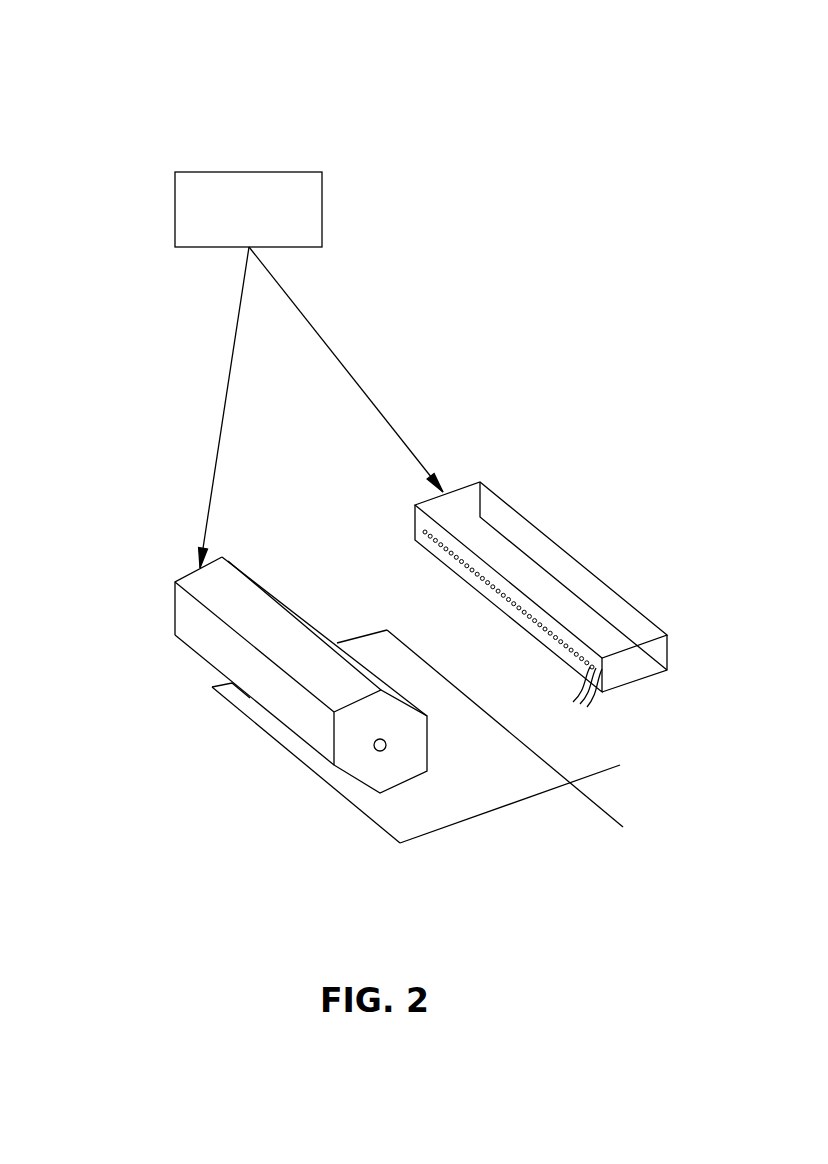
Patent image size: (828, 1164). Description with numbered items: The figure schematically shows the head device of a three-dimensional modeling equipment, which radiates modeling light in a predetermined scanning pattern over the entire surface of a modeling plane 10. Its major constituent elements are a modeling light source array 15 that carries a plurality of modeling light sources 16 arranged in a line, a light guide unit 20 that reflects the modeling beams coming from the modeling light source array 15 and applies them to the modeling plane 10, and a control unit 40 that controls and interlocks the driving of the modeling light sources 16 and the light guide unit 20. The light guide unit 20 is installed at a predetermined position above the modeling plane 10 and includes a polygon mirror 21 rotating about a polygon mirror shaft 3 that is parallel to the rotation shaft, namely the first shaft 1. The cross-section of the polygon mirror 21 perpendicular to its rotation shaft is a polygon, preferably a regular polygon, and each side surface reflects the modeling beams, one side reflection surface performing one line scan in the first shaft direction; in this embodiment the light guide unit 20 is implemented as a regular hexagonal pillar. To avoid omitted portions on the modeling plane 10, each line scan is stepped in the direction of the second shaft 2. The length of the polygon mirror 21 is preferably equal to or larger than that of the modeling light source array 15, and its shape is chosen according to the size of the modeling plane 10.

The control unit 40 is at (307, 192).
The modeling light source array 15 is at (635, 622).
The modeling light source 16 is at (512, 641).
The polygon mirror 21 is at (187, 618).
The light guide unit 20 is at (220, 745).
The polygon mirror shaft 3 is at (387, 750).
The modeling plane 10 is at (390, 823).
The second shaft 2 is at (532, 791).
The first shaft 1 is at (523, 750).